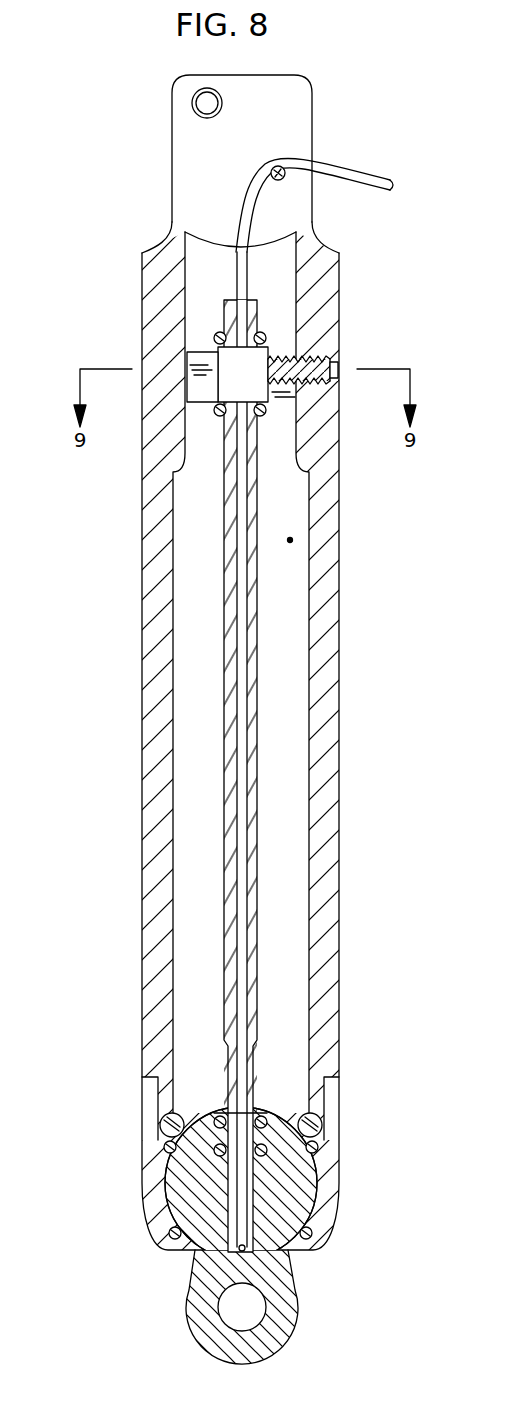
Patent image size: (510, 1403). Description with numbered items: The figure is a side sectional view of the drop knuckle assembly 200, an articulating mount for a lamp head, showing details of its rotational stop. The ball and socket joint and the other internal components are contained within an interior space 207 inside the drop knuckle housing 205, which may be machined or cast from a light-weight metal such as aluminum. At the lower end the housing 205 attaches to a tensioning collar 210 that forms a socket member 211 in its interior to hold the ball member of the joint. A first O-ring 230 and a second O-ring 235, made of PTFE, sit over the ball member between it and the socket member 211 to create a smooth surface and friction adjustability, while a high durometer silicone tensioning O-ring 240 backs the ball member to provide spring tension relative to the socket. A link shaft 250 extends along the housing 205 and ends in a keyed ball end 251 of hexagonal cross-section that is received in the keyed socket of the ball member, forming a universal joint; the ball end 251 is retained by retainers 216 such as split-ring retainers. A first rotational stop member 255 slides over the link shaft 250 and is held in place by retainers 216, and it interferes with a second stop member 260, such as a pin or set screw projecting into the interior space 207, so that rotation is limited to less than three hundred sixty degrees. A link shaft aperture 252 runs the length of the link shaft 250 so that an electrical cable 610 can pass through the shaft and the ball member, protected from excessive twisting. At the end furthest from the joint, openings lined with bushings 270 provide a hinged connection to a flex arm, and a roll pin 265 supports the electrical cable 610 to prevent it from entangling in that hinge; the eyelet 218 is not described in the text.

The drop knuckle assembly 200 is at (218, 719).
The drop knuckle housing 205 is at (340, 604).
The interior space 207 is at (290, 540).
The tensioning collar 210 is at (343, 1215).
The socket member 211 is at (332, 1178).
The retainers 216 is at (214, 337).
The eyelet 218 is at (292, 1318).
The first O-ring 230 is at (320, 1232).
The second O-ring 235 is at (320, 1147).
The tensioning O-ring 240 is at (322, 1120).
The link shaft 250 is at (258, 641).
The ball end 251 is at (200, 1142).
The link shaft aperture 252 is at (248, 673).
The first rotational stop member 255 is at (190, 360).
The second stop member 260 is at (345, 368).
The roll pin 265 is at (285, 178).
The bushings 270 is at (222, 103).
The electrical cable 610 is at (340, 177).